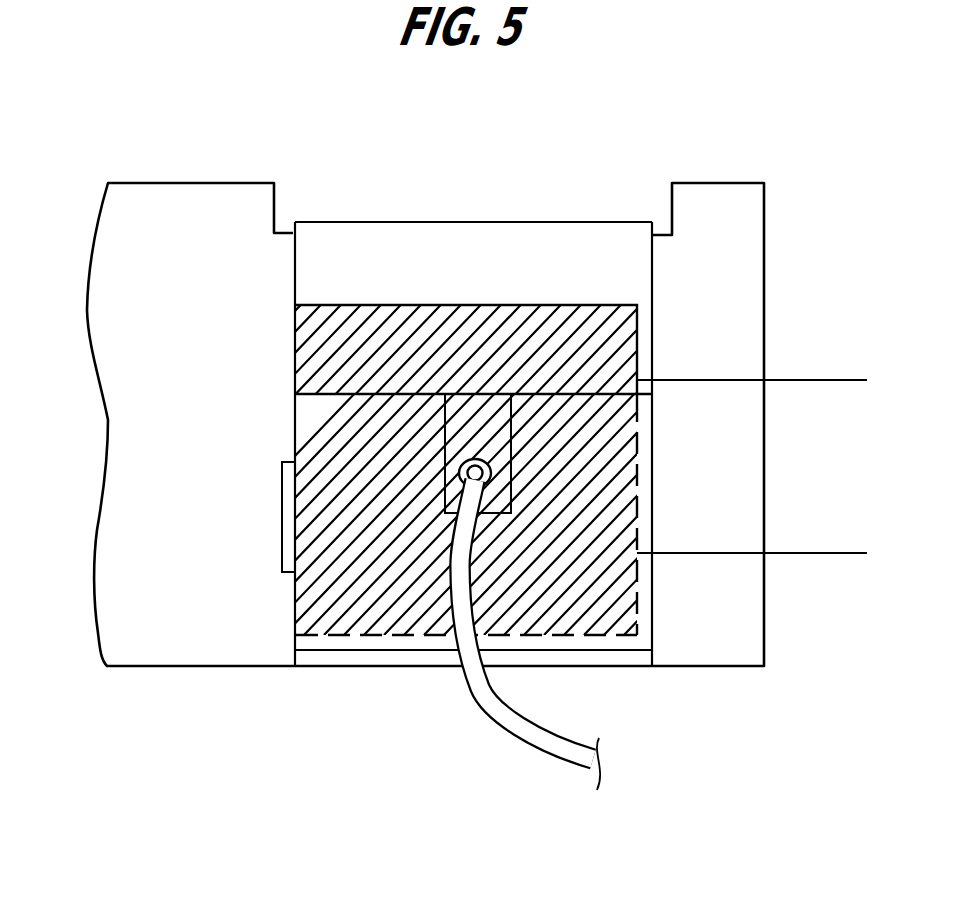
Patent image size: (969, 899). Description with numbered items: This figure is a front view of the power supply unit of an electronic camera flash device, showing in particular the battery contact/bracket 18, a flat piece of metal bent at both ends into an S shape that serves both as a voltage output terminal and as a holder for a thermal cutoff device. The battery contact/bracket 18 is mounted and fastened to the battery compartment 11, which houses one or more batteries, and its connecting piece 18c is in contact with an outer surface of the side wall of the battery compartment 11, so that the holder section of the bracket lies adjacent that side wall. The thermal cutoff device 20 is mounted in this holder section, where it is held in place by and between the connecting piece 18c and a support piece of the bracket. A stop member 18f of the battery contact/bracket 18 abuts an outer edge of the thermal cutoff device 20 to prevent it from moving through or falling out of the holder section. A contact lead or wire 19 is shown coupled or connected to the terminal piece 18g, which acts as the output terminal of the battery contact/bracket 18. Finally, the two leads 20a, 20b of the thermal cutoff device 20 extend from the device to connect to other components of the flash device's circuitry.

The battery compartment 11 is at (138, 422).
The battery contact/bracket 18 is at (563, 215).
The connecting piece 18c is at (371, 258).
The stop member 18f is at (282, 558).
The terminal piece 18g is at (455, 482).
The contact lead or wire 19 is at (540, 755).
The thermal cutoff device 20 is at (600, 340).
The lead 20a is at (807, 554).
The lead 20b is at (807, 381).